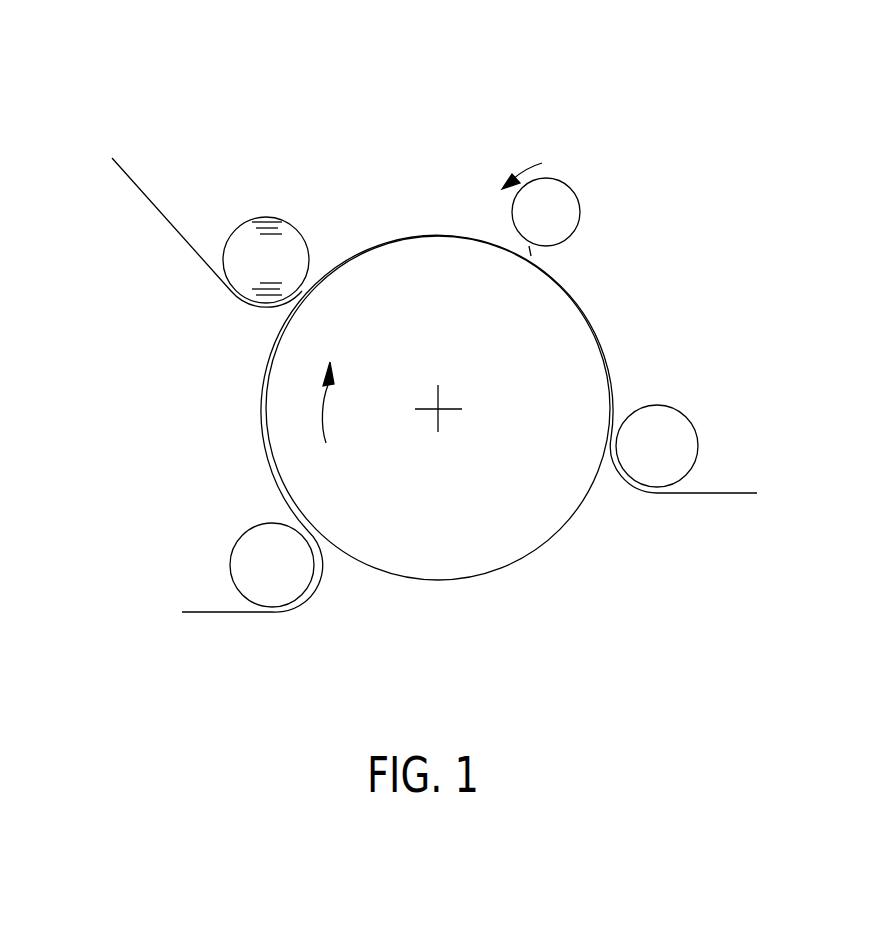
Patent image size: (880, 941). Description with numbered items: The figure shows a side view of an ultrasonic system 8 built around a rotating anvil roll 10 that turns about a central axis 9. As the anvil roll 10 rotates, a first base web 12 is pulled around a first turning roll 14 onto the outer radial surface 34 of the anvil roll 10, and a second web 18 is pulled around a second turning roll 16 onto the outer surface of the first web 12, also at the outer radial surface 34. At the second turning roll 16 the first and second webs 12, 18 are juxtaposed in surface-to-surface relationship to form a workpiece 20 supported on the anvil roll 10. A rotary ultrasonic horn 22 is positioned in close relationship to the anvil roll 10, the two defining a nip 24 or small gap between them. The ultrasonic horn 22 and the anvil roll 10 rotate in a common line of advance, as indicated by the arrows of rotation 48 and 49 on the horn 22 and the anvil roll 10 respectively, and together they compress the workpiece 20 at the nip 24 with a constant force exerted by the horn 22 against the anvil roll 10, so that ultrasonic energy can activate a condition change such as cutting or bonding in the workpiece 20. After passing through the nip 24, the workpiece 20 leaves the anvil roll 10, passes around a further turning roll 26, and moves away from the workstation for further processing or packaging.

The ultrasonic system 8 is at (432, 105).
The central axis 9 is at (440, 400).
The rotating anvil roll 10 is at (420, 562).
The first base web 12 is at (223, 615).
The first turning roll 14 is at (250, 541).
The second turning roll 16 is at (263, 228).
The second web 18 is at (135, 185).
The workpiece 20 is at (385, 240).
The rotary ultrasonic horn 22 is at (550, 190).
The nip 24 is at (532, 252).
The turning roll 26 is at (678, 433).
The outer radial surface 34 is at (567, 523).
The arrow of rotation 48 is at (542, 163).
The arrow of rotation 49 is at (325, 412).